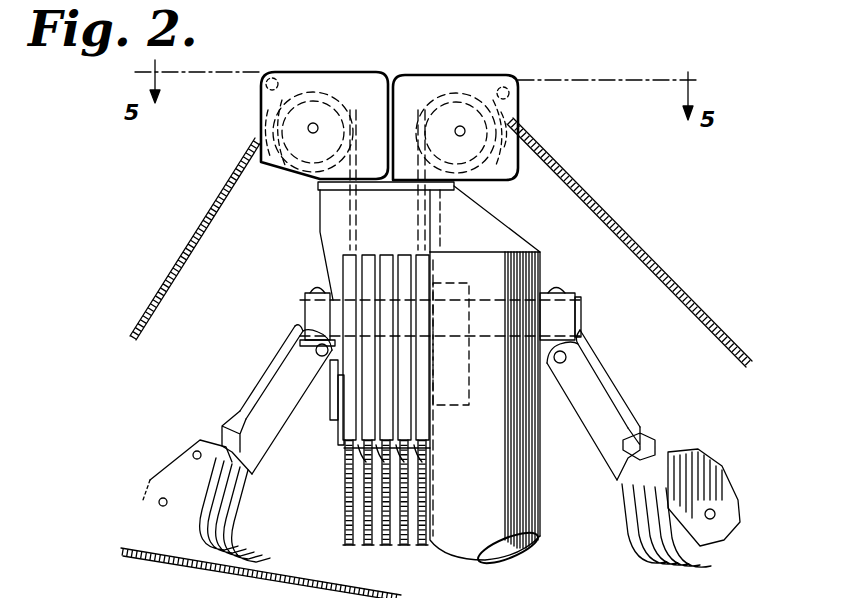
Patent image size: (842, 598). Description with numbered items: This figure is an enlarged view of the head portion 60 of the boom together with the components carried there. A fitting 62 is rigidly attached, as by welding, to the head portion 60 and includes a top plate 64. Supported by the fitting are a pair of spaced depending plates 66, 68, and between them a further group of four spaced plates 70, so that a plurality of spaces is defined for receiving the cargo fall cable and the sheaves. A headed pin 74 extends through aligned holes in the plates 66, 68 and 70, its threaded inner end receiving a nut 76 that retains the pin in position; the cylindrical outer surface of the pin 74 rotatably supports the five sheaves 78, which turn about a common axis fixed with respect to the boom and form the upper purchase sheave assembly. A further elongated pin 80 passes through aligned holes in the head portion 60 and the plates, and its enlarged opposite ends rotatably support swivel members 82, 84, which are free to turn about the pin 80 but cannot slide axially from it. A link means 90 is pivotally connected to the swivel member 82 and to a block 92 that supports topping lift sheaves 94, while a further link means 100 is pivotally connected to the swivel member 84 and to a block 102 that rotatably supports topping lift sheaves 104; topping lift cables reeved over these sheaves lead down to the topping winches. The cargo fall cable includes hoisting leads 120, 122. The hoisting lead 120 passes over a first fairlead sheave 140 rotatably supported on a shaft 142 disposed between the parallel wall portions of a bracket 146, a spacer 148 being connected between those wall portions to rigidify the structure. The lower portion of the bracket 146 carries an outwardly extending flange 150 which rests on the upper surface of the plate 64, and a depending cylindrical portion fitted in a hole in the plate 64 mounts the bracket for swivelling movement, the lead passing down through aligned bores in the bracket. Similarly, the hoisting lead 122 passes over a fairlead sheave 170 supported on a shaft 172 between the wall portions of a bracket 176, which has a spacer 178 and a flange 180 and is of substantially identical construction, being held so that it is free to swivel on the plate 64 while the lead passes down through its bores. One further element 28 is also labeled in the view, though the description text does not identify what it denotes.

The cross bar 28 is at (386, 455).
The head portion 60 is at (560, 270).
The fitting 62 is at (492, 205).
The top plate 64 is at (322, 196).
The depending plate 66 is at (337, 437).
The depending plate 68 is at (424, 446).
The spaced plates 70 is at (388, 255).
The headed pin 74 is at (324, 404).
The nut 76 is at (445, 376).
The sheaves 78 is at (380, 446).
The elongated pin 80 is at (308, 300).
The swivel member 82 is at (318, 322).
The swivel member 84 is at (573, 322).
The link means 90 is at (283, 372).
The block 92 is at (175, 467).
The topping lift sheaves 94 is at (244, 541).
The link means 100 is at (604, 373).
The block 102 is at (706, 492).
The topping lift sheaves 104 is at (644, 562).
The hoisting lead 120 is at (182, 262).
The hoisting lead 122 is at (664, 272).
The first fairlead sheave 140 is at (262, 153).
The shaft 142 is at (313, 123).
The bracket 146 is at (380, 66).
The spacer 148 is at (277, 78).
The flange 150 is at (318, 186).
The fairlead sheave 170 is at (522, 144).
The shaft 172 is at (460, 136).
The bracket 176 is at (486, 62).
The spacer 178 is at (509, 88).
The flange 180 is at (442, 212).